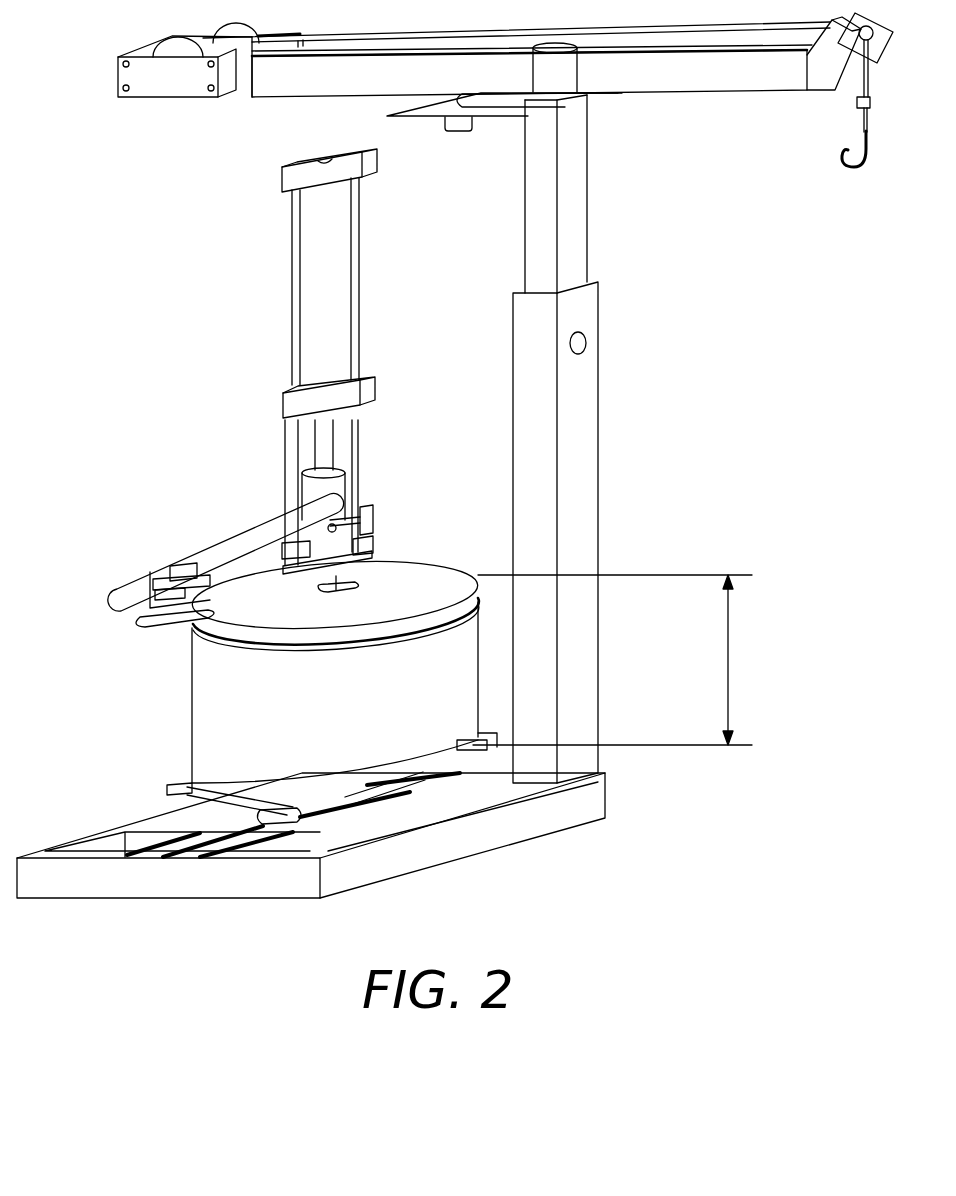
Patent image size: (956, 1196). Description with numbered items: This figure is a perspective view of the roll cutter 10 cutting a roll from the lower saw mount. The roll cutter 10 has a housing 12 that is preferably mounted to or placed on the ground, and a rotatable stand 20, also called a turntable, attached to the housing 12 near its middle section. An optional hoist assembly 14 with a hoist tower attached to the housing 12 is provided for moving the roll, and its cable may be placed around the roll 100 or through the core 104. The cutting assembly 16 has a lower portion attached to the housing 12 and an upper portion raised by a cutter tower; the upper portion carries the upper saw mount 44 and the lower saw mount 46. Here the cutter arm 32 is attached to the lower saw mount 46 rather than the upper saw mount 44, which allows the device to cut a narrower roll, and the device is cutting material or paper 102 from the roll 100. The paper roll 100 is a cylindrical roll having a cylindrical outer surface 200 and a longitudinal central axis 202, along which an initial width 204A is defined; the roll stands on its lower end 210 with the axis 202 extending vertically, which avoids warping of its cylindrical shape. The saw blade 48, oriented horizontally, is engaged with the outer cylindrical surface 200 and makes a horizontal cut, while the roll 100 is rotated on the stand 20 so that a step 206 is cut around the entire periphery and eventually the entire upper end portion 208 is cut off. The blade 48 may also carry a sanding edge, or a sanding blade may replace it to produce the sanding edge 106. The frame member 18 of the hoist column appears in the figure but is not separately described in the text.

The roll cutter 10 is at (714, 363).
The housing 12 is at (467, 843).
The hoist assembly 14 is at (588, 184).
The cutting assembly 16 is at (360, 312).
The lower column 18 is at (598, 527).
The stand 20 is at (312, 800).
The cutter arm 32 is at (202, 548).
The upper saw mount 44 is at (326, 157).
The lower saw mount 46 is at (337, 503).
The saw blade 48 is at (153, 622).
The roll 100 is at (400, 700).
The paper 102 is at (308, 709).
The core 104 is at (390, 578).
The sanding edge 106 is at (318, 598).
The cylindrical outer surface 200 is at (207, 727).
The longitudinal central axis 202 is at (336, 527).
The initial width 204A is at (728, 667).
The step 206 is at (205, 632).
The upper end portion 208 is at (223, 630).
The lower end 210 is at (325, 790).